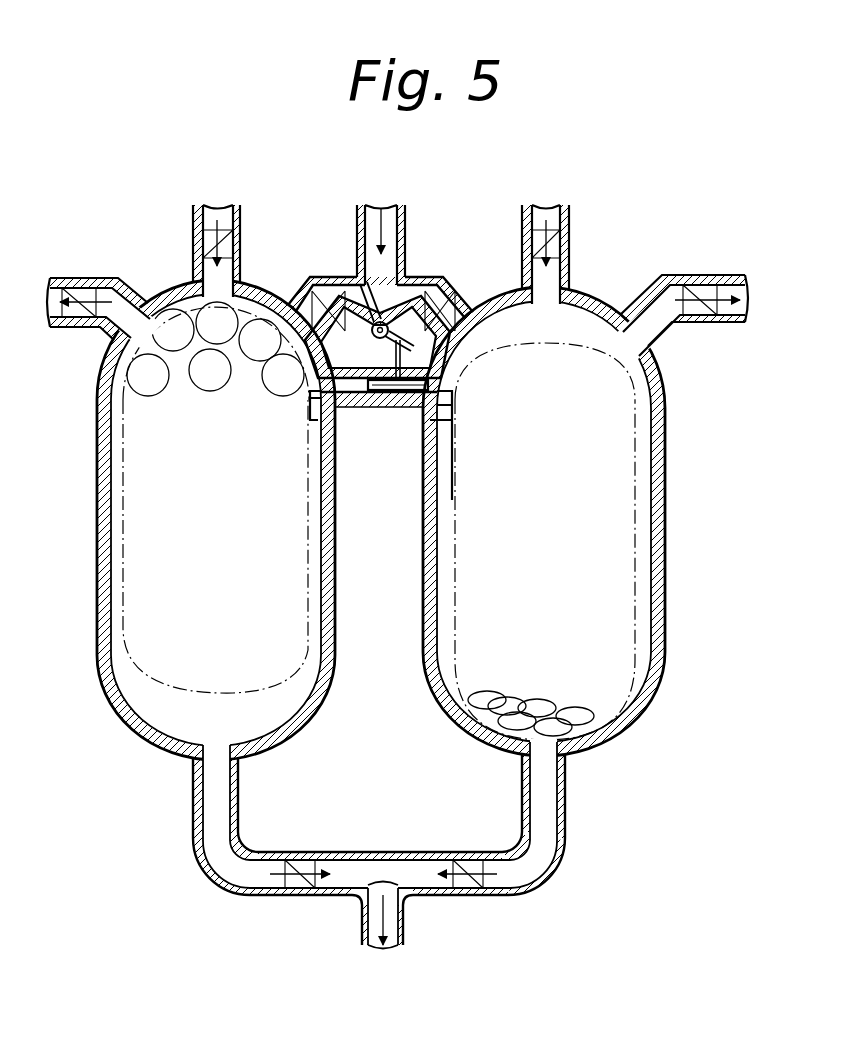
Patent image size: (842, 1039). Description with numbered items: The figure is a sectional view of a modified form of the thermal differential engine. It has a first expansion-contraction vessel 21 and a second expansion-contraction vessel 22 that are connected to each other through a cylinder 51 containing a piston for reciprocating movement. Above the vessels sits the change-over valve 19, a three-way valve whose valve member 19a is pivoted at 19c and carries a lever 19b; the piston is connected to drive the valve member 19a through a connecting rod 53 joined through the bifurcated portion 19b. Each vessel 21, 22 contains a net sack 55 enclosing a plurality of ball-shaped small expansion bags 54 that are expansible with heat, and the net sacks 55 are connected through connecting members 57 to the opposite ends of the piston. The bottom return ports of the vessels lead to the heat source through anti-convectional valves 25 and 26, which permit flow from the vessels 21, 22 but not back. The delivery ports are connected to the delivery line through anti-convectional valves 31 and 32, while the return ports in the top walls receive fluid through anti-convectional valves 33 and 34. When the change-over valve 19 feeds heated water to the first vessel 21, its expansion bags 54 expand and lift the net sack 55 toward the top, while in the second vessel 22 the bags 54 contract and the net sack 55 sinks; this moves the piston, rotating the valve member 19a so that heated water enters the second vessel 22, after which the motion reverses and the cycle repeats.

The change-over valve 19 is at (407, 244).
The valve member 19a is at (362, 293).
The lever (bifurcated portion) 19b is at (377, 347).
The pivot 19c is at (394, 300).
The first expansion-contraction vessel 21 is at (95, 580).
The second expansion-contraction vessel 22 is at (669, 580).
The anti-convectional valve 25 is at (298, 858).
The anti-convectional valve 26 is at (470, 858).
The anti-convectional valve 31 is at (82, 290).
The anti-convectional valve 32 is at (720, 275).
The first top valve 33 is at (239, 248).
The anti-convectional valve 34 is at (569, 250).
The cylinder 51 is at (413, 400).
The connecting rod 53 is at (418, 347).
The expansion bags 54 is at (188, 396).
The net sack 55 is at (550, 346).
The connecting members 57 is at (311, 399).